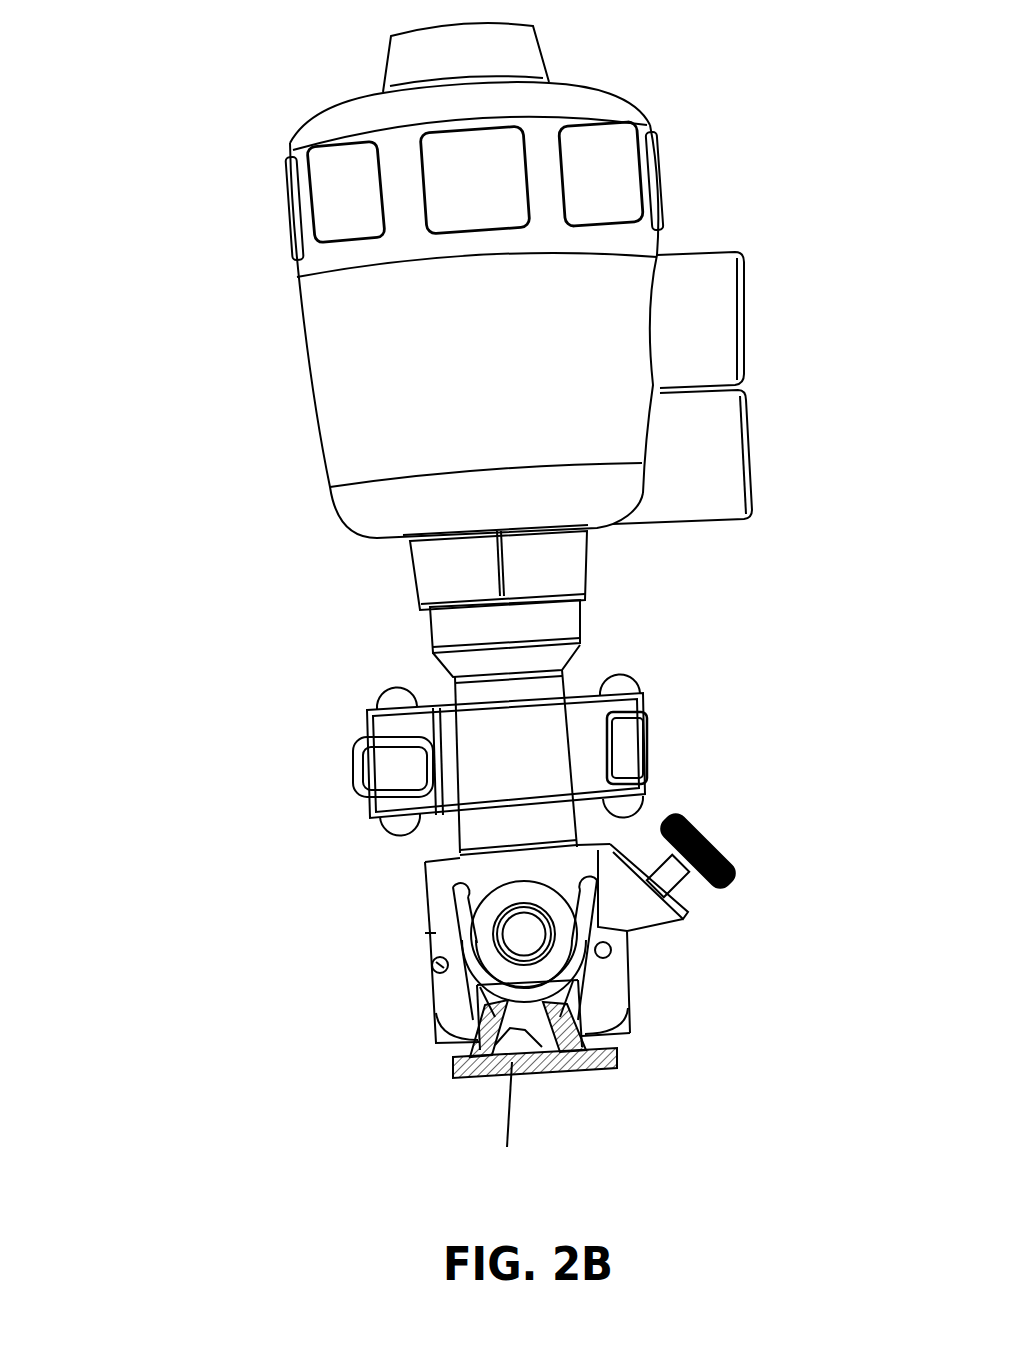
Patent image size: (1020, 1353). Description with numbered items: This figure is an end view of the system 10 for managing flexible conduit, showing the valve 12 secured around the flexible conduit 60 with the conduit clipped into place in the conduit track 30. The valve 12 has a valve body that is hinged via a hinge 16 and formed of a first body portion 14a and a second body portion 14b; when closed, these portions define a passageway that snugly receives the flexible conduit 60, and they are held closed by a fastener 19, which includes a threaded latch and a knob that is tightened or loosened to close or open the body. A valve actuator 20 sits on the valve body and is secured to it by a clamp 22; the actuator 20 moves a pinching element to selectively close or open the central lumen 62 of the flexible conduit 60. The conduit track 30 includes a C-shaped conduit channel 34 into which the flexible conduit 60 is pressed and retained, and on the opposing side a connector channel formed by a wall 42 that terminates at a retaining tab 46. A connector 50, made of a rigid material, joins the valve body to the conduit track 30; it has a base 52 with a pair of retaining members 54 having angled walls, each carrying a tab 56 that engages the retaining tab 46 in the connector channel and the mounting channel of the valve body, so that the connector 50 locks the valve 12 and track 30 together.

The system 10 is at (132, 667).
The valve 12 is at (208, 428).
The valve actuator 20 is at (650, 122).
The clamp 22 is at (643, 692).
The conduit channel 34 is at (560, 877).
The fastener 19 is at (710, 838).
The first body portion 14a is at (423, 863).
The second body portion 14b is at (443, 993).
The hinge 16 is at (440, 967).
The conduit track 30 is at (597, 960).
The wall 42 is at (587, 988).
The flexible conduit 60 is at (535, 874).
The central lumen 62 is at (535, 941).
The connector 50 is at (537, 1098).
The retaining tab 46 is at (617, 1037).
The base 52 is at (540, 1068).
The retaining members 54 is at (560, 1045).
The tab 56 is at (508, 1062).